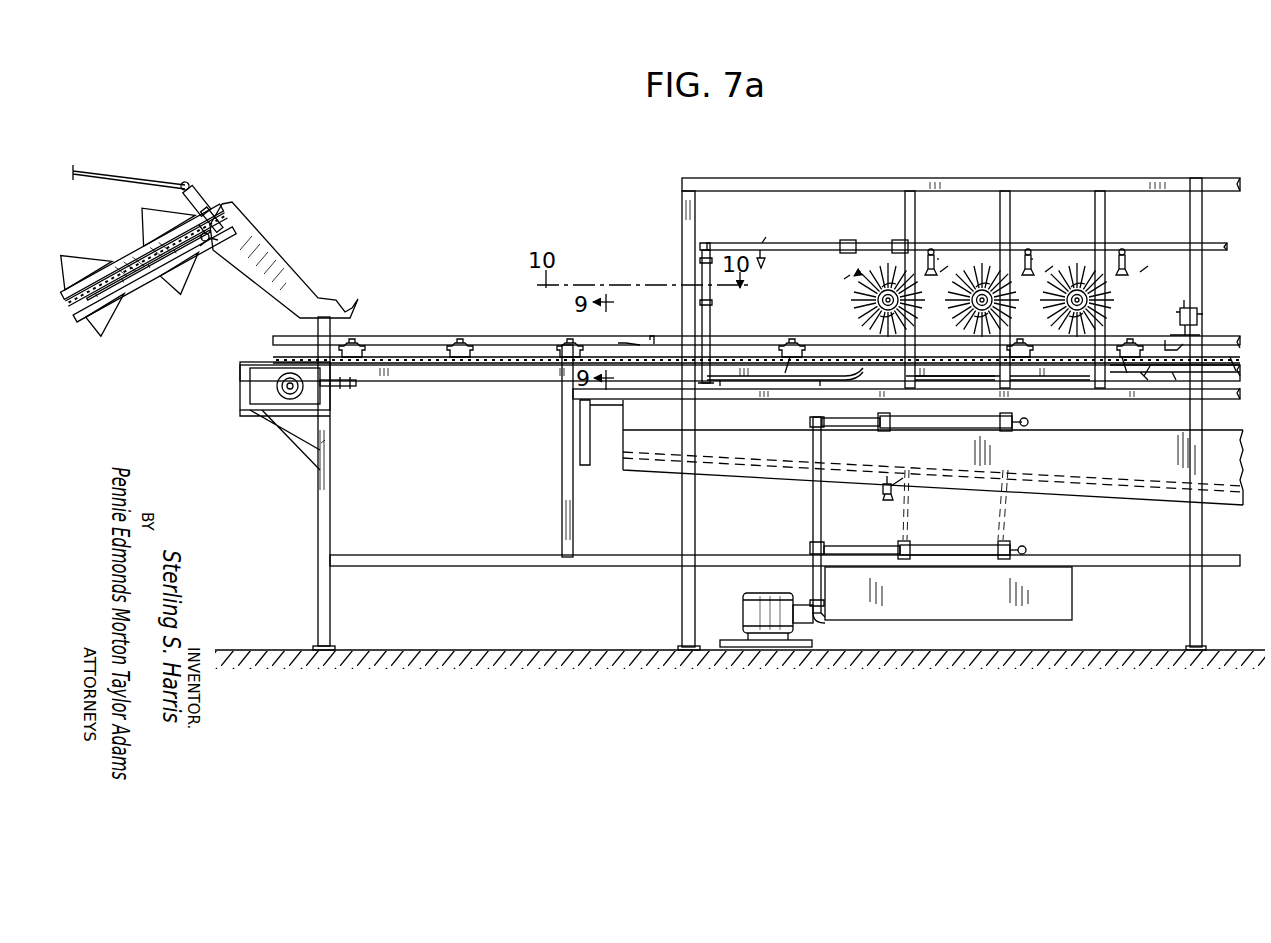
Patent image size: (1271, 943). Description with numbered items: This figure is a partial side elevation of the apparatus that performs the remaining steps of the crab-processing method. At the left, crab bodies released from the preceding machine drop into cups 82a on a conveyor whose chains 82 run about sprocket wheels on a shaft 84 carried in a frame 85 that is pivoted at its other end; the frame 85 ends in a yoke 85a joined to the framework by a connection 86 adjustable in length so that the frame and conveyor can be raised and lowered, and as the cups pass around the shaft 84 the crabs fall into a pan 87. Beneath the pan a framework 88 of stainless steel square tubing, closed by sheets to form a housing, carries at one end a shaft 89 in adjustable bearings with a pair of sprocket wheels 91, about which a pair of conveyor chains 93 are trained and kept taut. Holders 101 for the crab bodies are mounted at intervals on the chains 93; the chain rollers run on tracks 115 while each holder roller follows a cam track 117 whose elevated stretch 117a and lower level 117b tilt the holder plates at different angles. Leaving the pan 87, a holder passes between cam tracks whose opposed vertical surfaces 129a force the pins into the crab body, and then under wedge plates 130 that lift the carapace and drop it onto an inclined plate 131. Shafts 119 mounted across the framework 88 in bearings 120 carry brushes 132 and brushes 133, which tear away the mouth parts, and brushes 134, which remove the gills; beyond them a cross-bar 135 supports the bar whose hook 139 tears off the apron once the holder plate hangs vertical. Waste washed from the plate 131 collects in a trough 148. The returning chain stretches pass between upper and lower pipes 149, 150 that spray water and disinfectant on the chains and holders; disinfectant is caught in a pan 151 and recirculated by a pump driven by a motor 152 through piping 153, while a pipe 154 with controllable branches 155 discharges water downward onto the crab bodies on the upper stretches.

The chains 82 is at (126, 258).
The cups 82a is at (106, 332).
The shaft 84 is at (226, 222).
The frame 85 is at (146, 276).
The yoke 85a is at (198, 204).
The connection 86 is at (102, 175).
The pan 87 is at (270, 254).
The framework 88 is at (928, 176).
The shaft 89 is at (286, 396).
The sprocket wheels 91 is at (268, 368).
The conveyor chains 93 is at (440, 376).
The holders 101 is at (362, 344).
The tracks 115 is at (940, 372).
The cam track 117 is at (730, 389).
The elevated stretch 117a is at (898, 377).
The level 117b is at (1050, 375).
The shafts 119 is at (878, 306).
The bearings 120 is at (877, 288).
The opposed vertical surfaces 129a is at (1156, 342).
The wedge plates 130 is at (638, 340).
The plate 131 is at (1138, 419).
The brushes 132 is at (874, 294).
The brushes 133 is at (962, 272).
The brushes 134 is at (1060, 272).
The cross-bar 135 is at (1198, 320).
The hook 139 is at (1186, 372).
The trough 148 is at (1131, 460).
The upper water pipes 149 is at (914, 414).
The lower water pipe 150 is at (914, 542).
The pan 151 is at (1060, 604).
The motor 152 is at (766, 605).
The piping 153 is at (823, 524).
The pipe 154 is at (868, 241).
The controllable branches 155 is at (766, 268).